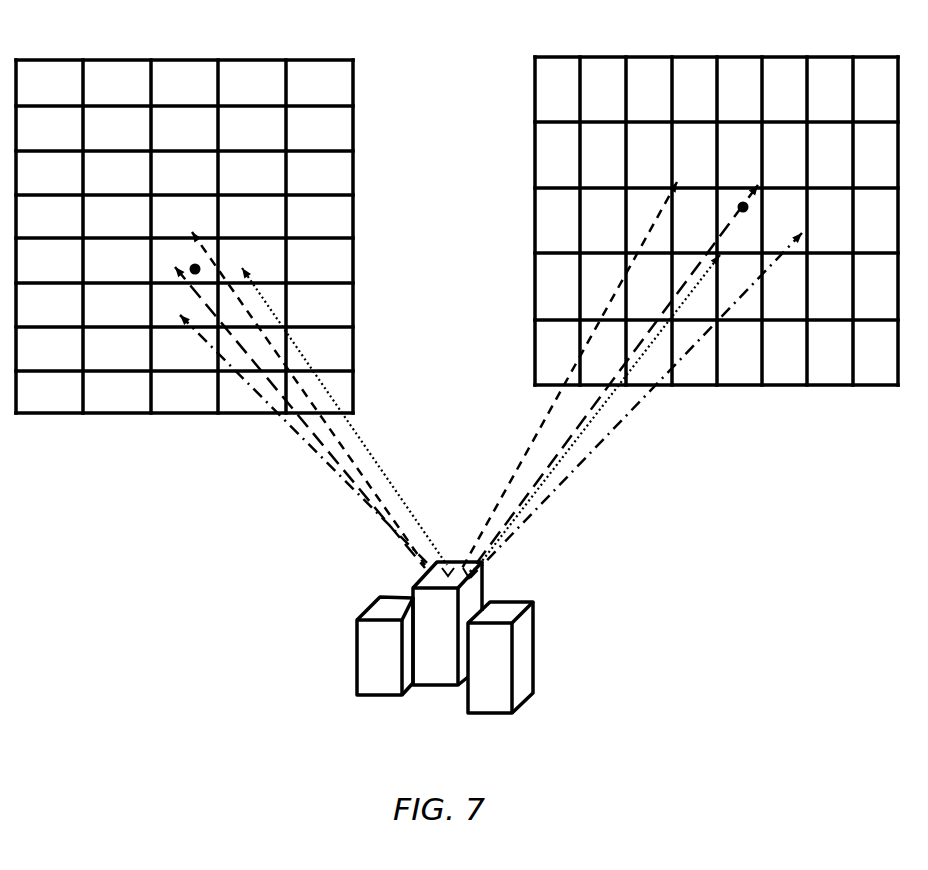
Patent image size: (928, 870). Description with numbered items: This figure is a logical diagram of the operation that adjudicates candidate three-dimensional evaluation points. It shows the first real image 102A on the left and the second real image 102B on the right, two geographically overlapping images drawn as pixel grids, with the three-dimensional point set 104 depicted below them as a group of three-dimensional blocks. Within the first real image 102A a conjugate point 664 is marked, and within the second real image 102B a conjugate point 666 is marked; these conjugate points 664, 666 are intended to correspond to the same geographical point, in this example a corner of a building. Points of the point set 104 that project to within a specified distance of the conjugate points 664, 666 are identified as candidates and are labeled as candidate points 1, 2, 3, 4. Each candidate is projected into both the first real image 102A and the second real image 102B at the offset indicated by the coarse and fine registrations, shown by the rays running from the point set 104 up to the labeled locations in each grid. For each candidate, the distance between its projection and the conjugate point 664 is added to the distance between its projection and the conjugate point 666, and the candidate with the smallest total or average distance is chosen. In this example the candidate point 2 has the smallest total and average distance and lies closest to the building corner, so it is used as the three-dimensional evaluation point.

The first real image 102A is at (252, 58).
The second real image 102B is at (793, 55).
The 3D point set 104 is at (498, 619).
The conjugate point 664 is at (195, 266).
The conjugate point 666 is at (740, 207).
The candidate 3D point 1 is at (498, 390).
The candidate 3D point 2 is at (488, 397).
The candidate 3D point 3 is at (472, 361).
The candidate 3D point 4 is at (437, 358).